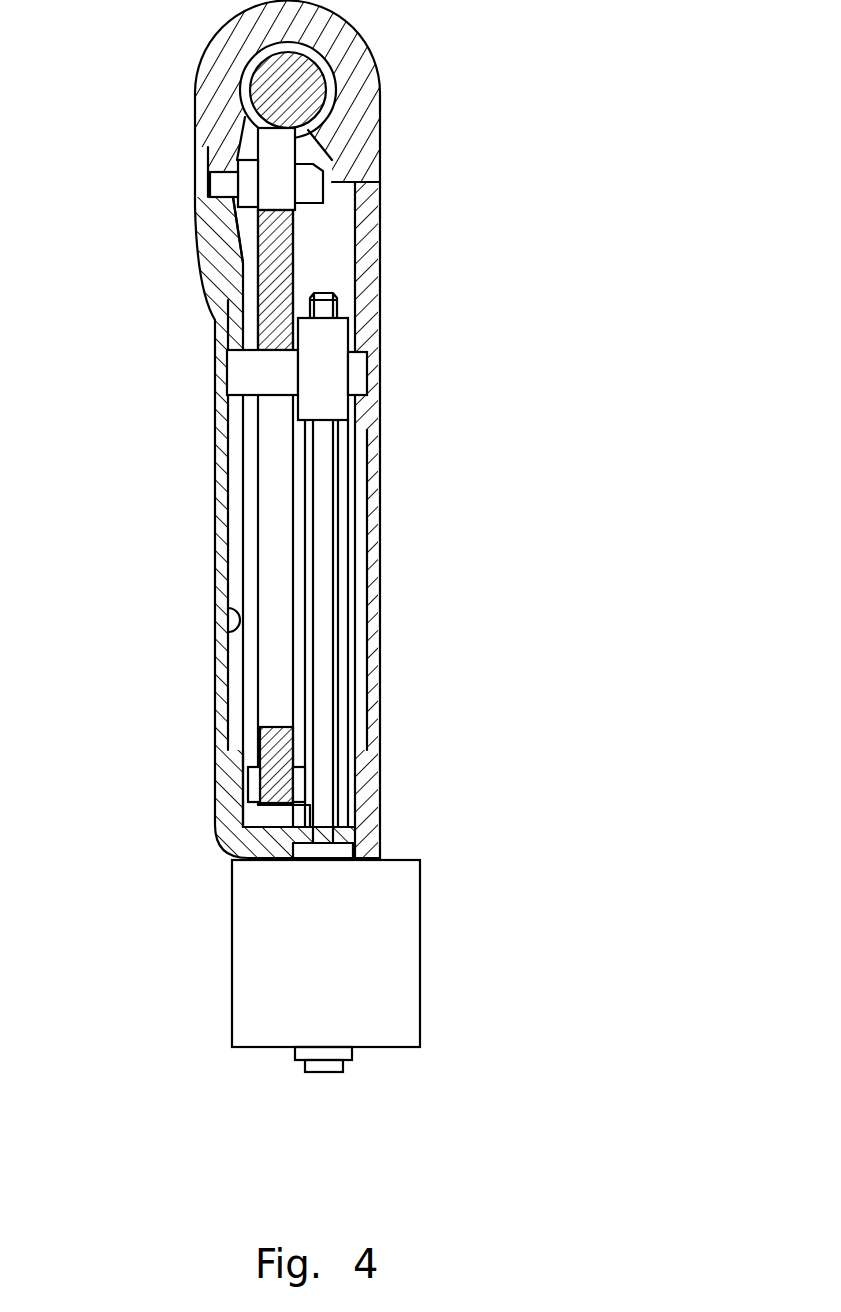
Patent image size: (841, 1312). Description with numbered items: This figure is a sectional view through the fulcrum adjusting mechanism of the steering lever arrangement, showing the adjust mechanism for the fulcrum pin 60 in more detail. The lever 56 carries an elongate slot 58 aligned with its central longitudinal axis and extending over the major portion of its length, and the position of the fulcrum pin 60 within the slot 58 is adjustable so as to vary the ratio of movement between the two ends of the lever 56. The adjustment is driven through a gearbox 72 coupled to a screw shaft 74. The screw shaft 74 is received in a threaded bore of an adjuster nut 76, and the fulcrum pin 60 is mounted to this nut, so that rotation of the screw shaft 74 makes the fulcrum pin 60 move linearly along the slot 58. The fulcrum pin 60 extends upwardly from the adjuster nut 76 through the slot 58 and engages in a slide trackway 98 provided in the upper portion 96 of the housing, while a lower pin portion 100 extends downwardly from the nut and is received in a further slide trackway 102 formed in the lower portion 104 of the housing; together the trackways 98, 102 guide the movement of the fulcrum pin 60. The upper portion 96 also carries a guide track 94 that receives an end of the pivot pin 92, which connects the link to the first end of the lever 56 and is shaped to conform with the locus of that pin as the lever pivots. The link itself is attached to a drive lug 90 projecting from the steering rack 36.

The steering rack 36 is at (322, 74).
The lever 56 is at (262, 316).
The elongate slot 58 is at (275, 518).
The fulcrum pin 60 is at (248, 377).
The gearbox 72 is at (318, 947).
The screw shaft 74 is at (317, 592).
The adjuster nut 76 is at (310, 397).
The drive lug 90 is at (270, 172).
The pivot pin 92 is at (218, 192).
The guide track 94 is at (230, 203).
The upper portion of the housing 96 is at (217, 752).
The slide trackway 98 is at (217, 605).
The lower pin portion 100 is at (355, 373).
The further slide trackway 102 is at (357, 753).
The lower portion of the housing 104 is at (360, 277).